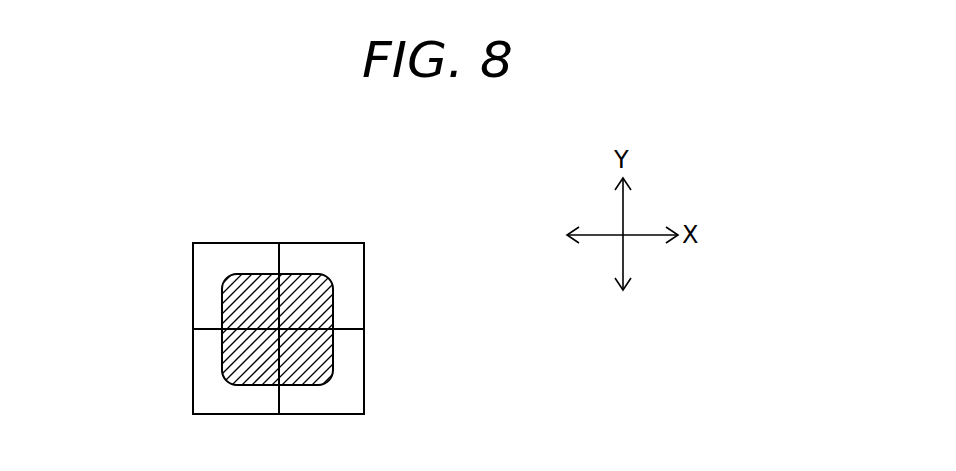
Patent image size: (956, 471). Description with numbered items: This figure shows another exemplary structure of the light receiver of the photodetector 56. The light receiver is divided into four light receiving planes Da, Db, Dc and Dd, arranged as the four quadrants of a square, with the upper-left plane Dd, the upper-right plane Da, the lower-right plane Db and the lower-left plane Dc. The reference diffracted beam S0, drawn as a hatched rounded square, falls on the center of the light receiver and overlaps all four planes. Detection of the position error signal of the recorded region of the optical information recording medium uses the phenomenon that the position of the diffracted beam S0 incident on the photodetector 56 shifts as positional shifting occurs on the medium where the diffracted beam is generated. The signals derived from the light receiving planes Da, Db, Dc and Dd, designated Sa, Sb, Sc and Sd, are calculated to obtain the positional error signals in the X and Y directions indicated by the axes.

The photodetector 56 is at (500, 145).
The light receiving plane Da is at (364, 264).
The light receiving plane Db is at (364, 398).
The light receiving plane Dc is at (203, 402).
The light receiving plane Dd is at (203, 268).
The diffracted beam S0 is at (313, 350).